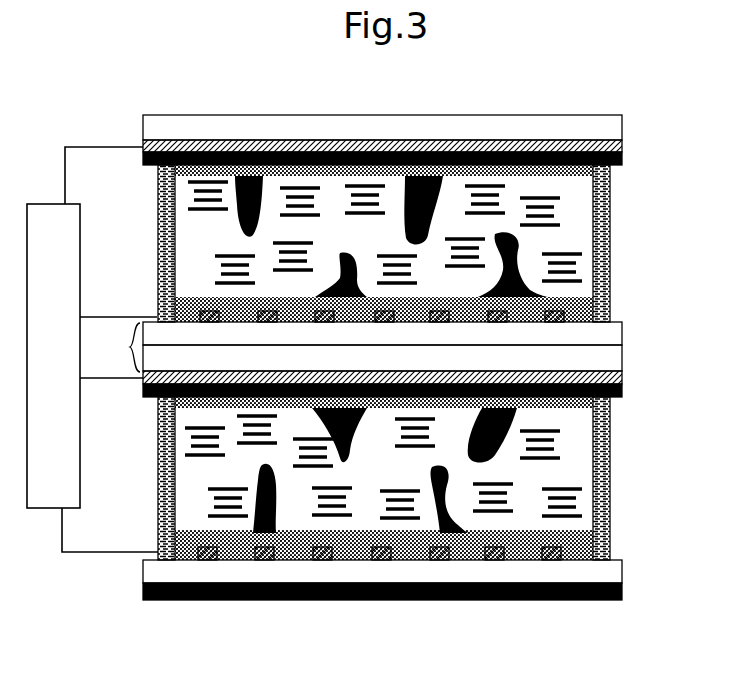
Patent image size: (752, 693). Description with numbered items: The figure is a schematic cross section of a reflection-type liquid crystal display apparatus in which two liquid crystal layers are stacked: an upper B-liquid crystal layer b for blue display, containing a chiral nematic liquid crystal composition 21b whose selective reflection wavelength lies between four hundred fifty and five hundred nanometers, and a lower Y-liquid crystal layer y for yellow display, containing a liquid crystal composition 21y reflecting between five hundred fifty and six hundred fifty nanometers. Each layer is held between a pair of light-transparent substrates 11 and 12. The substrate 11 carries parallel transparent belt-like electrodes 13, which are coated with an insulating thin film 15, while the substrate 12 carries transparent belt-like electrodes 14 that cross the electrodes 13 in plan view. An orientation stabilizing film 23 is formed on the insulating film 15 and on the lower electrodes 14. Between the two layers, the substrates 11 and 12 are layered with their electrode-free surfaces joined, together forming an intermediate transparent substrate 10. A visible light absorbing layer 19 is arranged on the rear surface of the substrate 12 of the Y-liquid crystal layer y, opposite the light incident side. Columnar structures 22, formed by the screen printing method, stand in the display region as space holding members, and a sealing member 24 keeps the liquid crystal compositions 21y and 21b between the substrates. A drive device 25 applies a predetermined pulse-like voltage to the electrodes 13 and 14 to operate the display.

The intermediate transparent substrate 10 is at (114, 347).
The substrate 11 is at (608, 132).
The substrate 12 is at (608, 342).
The transparent belt-like electrode 13 is at (623, 145).
The transparent belt-like electrode 14 is at (575, 313).
The insulating thin film 15 is at (623, 158).
The visible light absorbing layer 19 is at (615, 600).
The liquid crystal composition 21b is at (560, 208).
The liquid crystal composition 21y is at (563, 447).
The columnar structure 22 is at (412, 197).
The orientation stabilizing film 23 is at (557, 158).
The sealing member 24 is at (608, 267).
The drive device 25 is at (64, 355).
The B-liquid crystal layer b is at (588, 231).
The Y-liquid crystal layer y is at (580, 466).